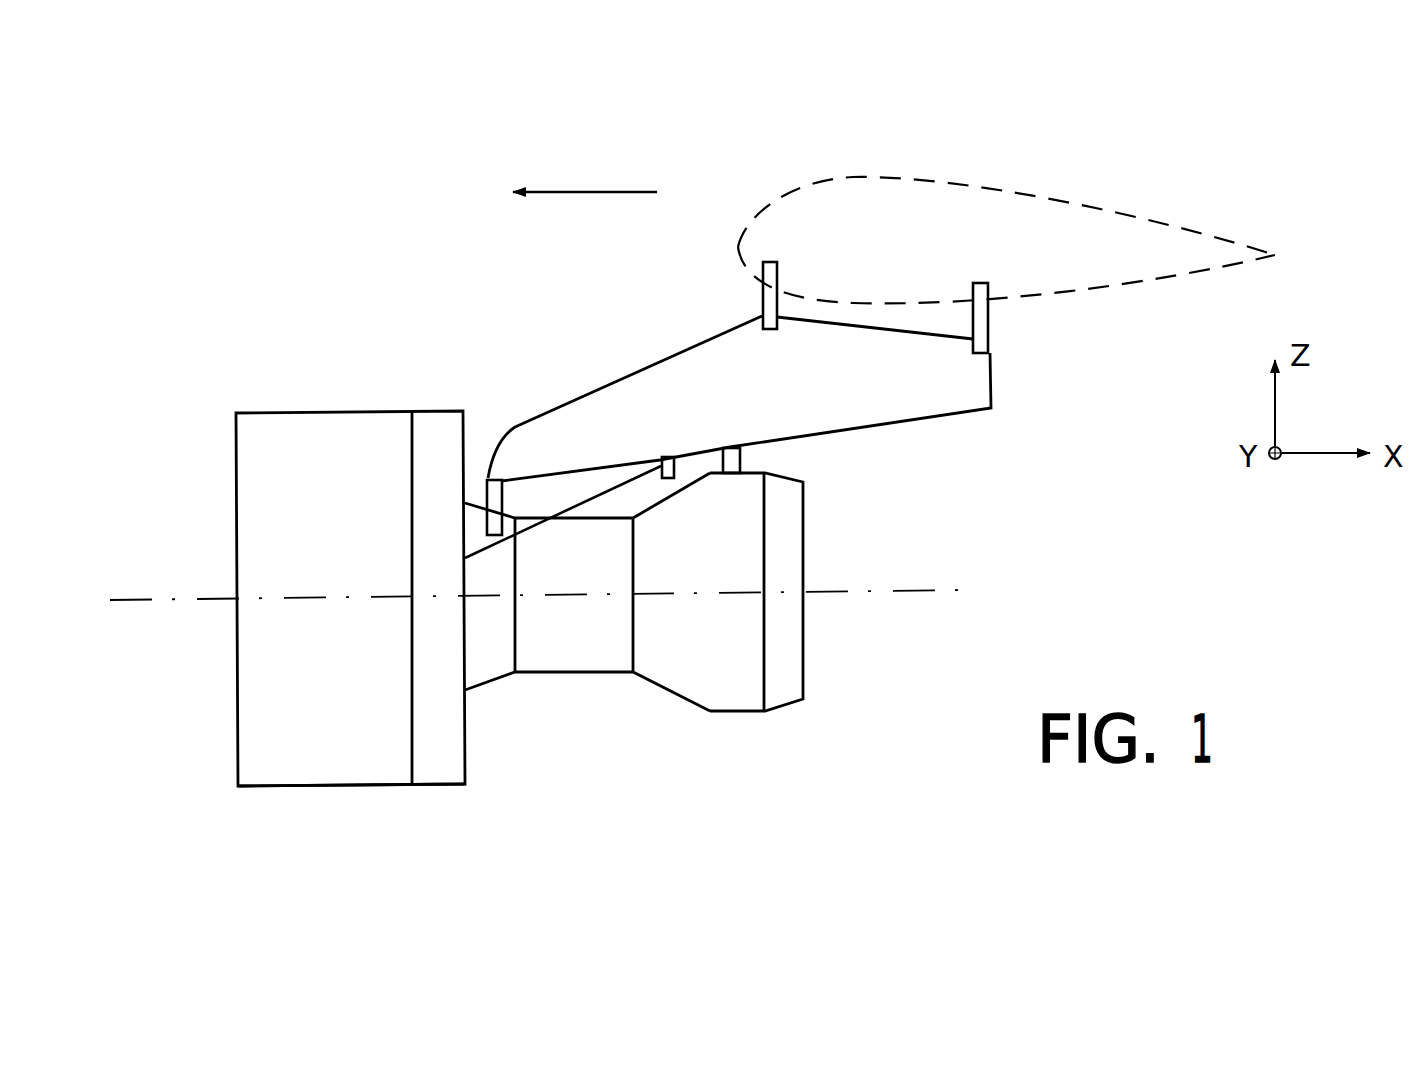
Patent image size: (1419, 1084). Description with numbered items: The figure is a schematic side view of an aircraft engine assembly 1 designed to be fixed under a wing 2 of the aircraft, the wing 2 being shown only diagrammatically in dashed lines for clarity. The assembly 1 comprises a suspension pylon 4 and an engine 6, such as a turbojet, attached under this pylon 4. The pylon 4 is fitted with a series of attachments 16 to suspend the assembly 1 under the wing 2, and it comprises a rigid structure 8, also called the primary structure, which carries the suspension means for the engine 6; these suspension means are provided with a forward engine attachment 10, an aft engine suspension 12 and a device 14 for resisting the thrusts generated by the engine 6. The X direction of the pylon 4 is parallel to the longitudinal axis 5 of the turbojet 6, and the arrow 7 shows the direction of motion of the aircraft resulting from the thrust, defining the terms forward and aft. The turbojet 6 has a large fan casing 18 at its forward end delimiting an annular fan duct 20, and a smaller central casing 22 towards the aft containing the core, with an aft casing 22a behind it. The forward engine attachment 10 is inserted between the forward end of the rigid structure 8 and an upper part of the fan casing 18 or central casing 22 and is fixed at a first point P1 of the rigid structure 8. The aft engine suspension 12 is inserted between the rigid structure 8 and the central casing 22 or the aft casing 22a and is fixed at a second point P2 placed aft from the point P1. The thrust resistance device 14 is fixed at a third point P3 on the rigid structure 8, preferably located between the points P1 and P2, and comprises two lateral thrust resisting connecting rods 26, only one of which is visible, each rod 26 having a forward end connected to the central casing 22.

The aircraft engine assembly 1 is at (188, 240).
The wing 2 is at (1043, 198).
The suspension pylon 4 is at (345, 297).
The longitudinal axis 5 is at (140, 600).
The engine 6 is at (360, 796).
The arrow 7 is at (588, 192).
The rigid structure 8 is at (930, 422).
The forward engine attachment 10 is at (480, 490).
The aft engine suspension 12 is at (732, 478).
The thrust resistance device 14 is at (672, 488).
The attachments 16 is at (978, 282).
The fan casing 18 is at (287, 767).
The annular fan duct 20 is at (424, 510).
The central casing 22 is at (543, 657).
The aft casing 22a is at (750, 530).
The lateral thrust resisting connecting rod 26 is at (534, 529).
The first point P1 is at (487, 474).
The second point P2 is at (728, 446).
The third point P3 is at (664, 456).